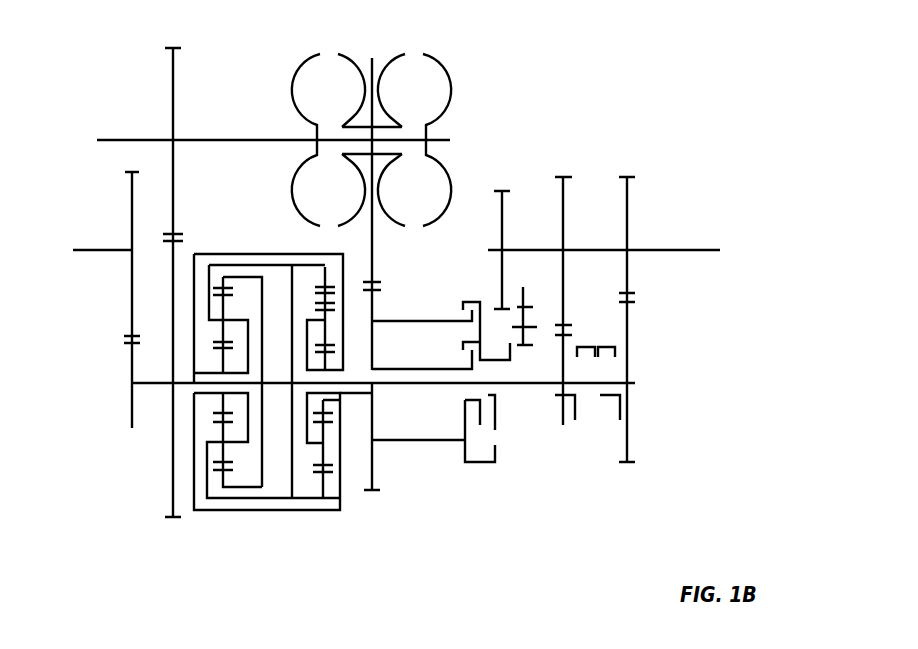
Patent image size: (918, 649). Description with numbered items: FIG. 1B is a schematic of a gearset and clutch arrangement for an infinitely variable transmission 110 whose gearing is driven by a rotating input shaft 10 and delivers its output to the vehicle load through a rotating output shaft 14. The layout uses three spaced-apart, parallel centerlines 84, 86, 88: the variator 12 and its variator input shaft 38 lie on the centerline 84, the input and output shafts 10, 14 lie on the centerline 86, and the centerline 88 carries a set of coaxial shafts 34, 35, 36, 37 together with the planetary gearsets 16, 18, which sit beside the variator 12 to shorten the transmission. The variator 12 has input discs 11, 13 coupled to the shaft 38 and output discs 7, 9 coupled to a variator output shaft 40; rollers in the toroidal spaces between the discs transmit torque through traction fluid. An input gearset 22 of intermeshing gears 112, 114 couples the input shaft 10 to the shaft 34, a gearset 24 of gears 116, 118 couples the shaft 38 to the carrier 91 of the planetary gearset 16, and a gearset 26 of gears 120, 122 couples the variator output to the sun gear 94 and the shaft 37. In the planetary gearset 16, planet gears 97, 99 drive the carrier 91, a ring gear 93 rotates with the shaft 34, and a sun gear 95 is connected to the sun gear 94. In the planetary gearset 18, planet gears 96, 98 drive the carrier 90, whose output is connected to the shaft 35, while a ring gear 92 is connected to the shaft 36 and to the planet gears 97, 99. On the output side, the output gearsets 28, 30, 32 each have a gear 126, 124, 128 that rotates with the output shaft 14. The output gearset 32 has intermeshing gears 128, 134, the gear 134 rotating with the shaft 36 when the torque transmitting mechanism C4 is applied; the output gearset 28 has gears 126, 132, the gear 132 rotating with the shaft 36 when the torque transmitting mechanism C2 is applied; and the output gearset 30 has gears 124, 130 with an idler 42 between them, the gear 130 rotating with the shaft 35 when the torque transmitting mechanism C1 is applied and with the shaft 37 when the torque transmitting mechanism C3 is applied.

The output disc 7 is at (351, 119).
The output disc 9 is at (390, 119).
The input shaft 10 is at (114, 250).
The input disc 11 is at (292, 78).
The variator 12 is at (464, 71).
The input disc 13 is at (457, 112).
The output shaft 14 is at (715, 250).
The planetary gearset 16 is at (222, 517).
The planetary gearset 18 is at (308, 517).
The input gearset 22 is at (130, 427).
The input gearset 24 is at (173, 519).
The input gearset 26 is at (373, 494).
The output gearset 28 is at (564, 434).
The output gearset 30 is at (486, 454).
The output gearset 32 is at (627, 470).
The shaft 34 is at (160, 382).
The shaft 35 is at (408, 368).
The shaft 36 is at (497, 418).
The shaft 37 is at (428, 319).
The variator input shaft 38 is at (226, 140).
The variator output shaft 40 is at (385, 155).
The idler 42 is at (523, 299).
The centerline 84 is at (95, 139).
The centerline 86 is at (70, 212).
The centerline 88 is at (121, 381).
The carrier 90 is at (307, 340).
The carrier 91 is at (242, 318).
The ring gear 92 is at (322, 288).
The ring gear 93 is at (262, 298).
The sun gear 94 is at (327, 362).
The sun gear 95 is at (225, 407).
The planet gear 96 is at (322, 306).
The planet gear 97 is at (225, 330).
The planet gear 98 is at (323, 452).
The planet gear 99 is at (225, 457).
The transmission 110 is at (670, 81).
The gear 112 is at (132, 295).
The gear 114 is at (154, 401).
The gear 116 is at (173, 188).
The gear 118 is at (173, 283).
The gear 120 is at (372, 251).
The gear 122 is at (373, 306).
The gear 124 is at (502, 229).
The gear 126 is at (563, 229).
The gear 128 is at (627, 229).
The gear 130 is at (502, 352).
The gear 132 is at (560, 396).
The gear 134 is at (628, 338).
The torque transmitting mechanism C1 is at (460, 351).
The torque transmitting mechanism C2 is at (578, 372).
The torque transmitting mechanism C3 is at (477, 321).
The torque transmitting mechanism C4 is at (614, 372).